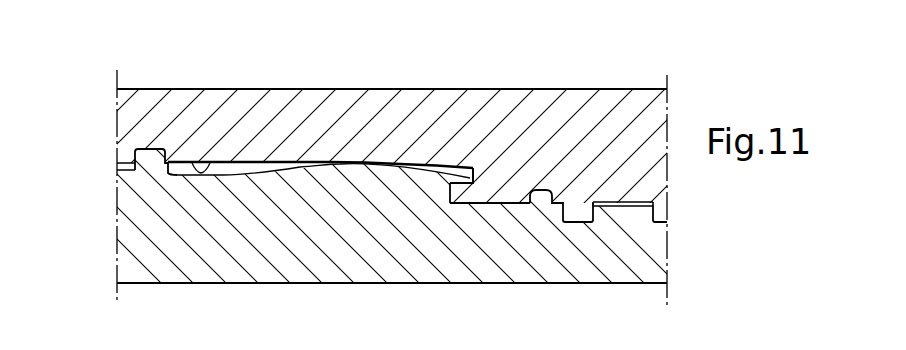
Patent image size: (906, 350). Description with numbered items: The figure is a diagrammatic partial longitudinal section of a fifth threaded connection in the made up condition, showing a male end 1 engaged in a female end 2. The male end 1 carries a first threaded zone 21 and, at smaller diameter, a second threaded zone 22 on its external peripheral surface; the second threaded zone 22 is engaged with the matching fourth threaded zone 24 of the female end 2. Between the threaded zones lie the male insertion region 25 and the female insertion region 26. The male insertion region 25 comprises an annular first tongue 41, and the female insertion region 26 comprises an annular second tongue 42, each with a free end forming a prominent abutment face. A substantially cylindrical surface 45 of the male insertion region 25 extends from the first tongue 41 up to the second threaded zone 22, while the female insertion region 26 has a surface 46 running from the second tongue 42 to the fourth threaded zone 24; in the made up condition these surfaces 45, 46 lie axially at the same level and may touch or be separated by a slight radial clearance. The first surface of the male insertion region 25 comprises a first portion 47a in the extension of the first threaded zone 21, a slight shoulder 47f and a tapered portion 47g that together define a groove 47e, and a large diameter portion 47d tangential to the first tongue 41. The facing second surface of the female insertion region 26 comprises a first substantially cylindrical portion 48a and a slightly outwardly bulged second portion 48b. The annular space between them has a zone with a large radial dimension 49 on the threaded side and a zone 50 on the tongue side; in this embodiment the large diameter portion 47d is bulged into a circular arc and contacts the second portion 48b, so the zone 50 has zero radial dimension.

The male end 1 is at (88, 251).
The female end 2 is at (88, 111).
The first threaded zone 21 is at (118, 170).
The second threaded zone 22 is at (624, 208).
The fourth threaded zone 24 is at (665, 213).
The male insertion region 25 is at (448, 265).
The female insertion region 26 is at (594, 152).
The first tongue 41 is at (478, 174).
The second tongue 42 is at (446, 198).
The cylindrical surface 45 is at (557, 205).
The surface 46 is at (503, 205).
The first portion 47a is at (180, 177).
The large diameter portion 47d is at (391, 165).
The groove 47e is at (236, 171).
The slight shoulder 47f is at (222, 177).
The tapered portion 47g is at (293, 171).
The first substantially cylindrical portion 48a is at (190, 168).
The second portion 48b is at (318, 173).
The zone with a large radial dimension 49 is at (200, 168).
The zone with a small radial dimension 50 is at (448, 168).